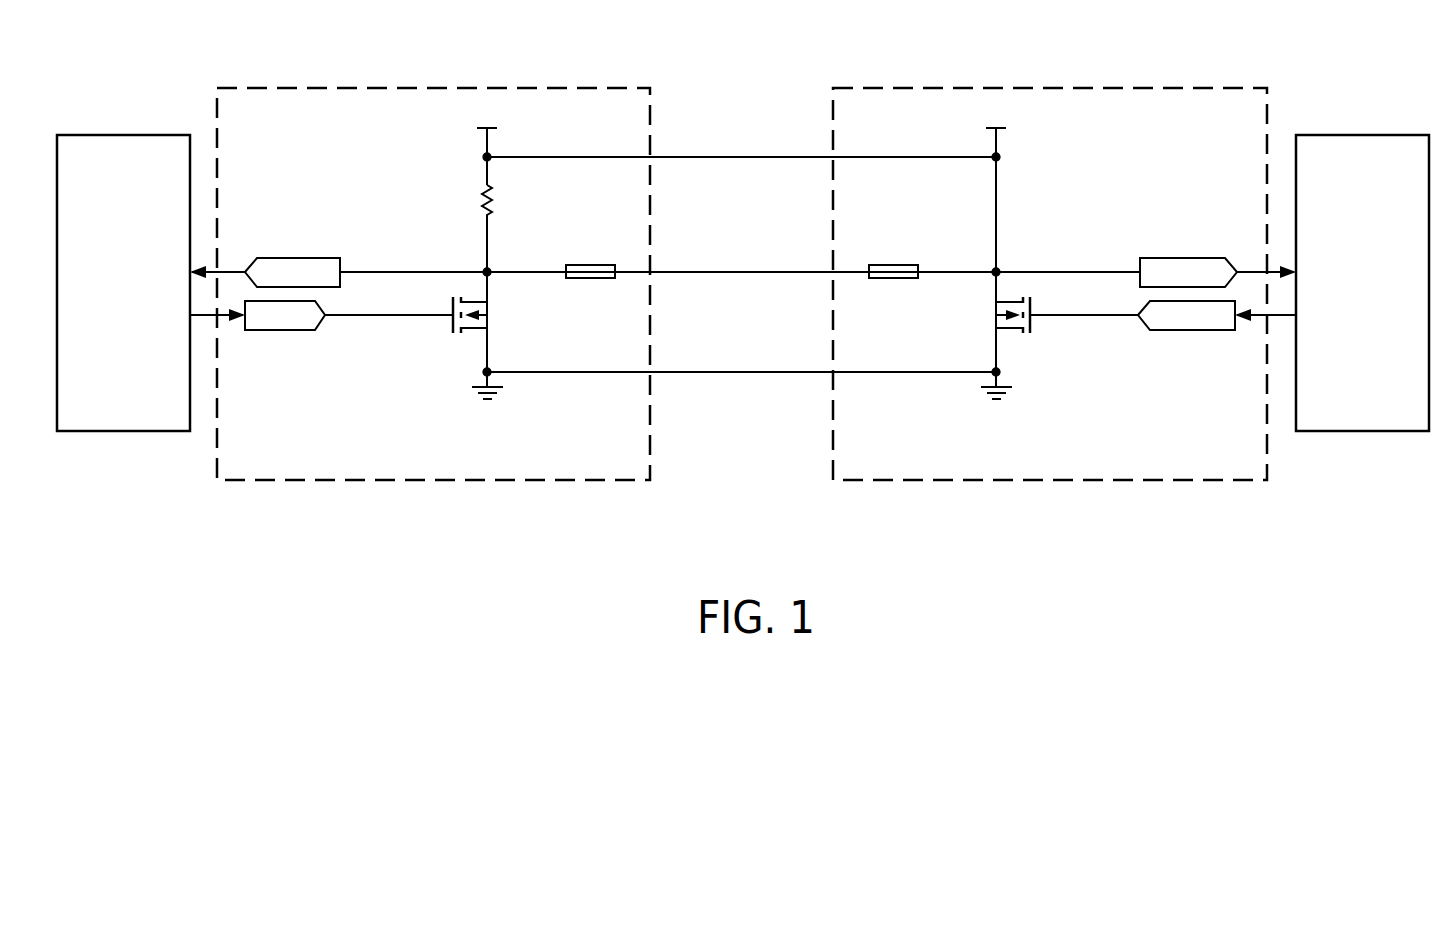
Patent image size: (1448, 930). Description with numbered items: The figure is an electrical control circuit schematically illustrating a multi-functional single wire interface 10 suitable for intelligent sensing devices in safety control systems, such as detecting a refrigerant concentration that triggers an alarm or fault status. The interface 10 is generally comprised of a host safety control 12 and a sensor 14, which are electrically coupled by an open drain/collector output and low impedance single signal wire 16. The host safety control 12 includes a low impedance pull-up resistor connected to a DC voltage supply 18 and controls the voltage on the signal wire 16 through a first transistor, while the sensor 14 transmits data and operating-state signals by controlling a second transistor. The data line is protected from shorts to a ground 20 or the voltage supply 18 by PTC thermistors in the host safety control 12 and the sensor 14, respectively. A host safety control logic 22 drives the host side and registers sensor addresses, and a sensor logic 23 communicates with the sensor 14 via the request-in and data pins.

The multi-functional single wire interface 10 is at (742, 104).
The host safety control 12 is at (452, 488).
The sensor 14 is at (1070, 488).
The signal wire 16 is at (743, 279).
The DC voltage supply 18 is at (742, 164).
The ground 20 is at (743, 379).
The host safety control logic 22 is at (120, 436).
The sensor logic 23 is at (1359, 436).